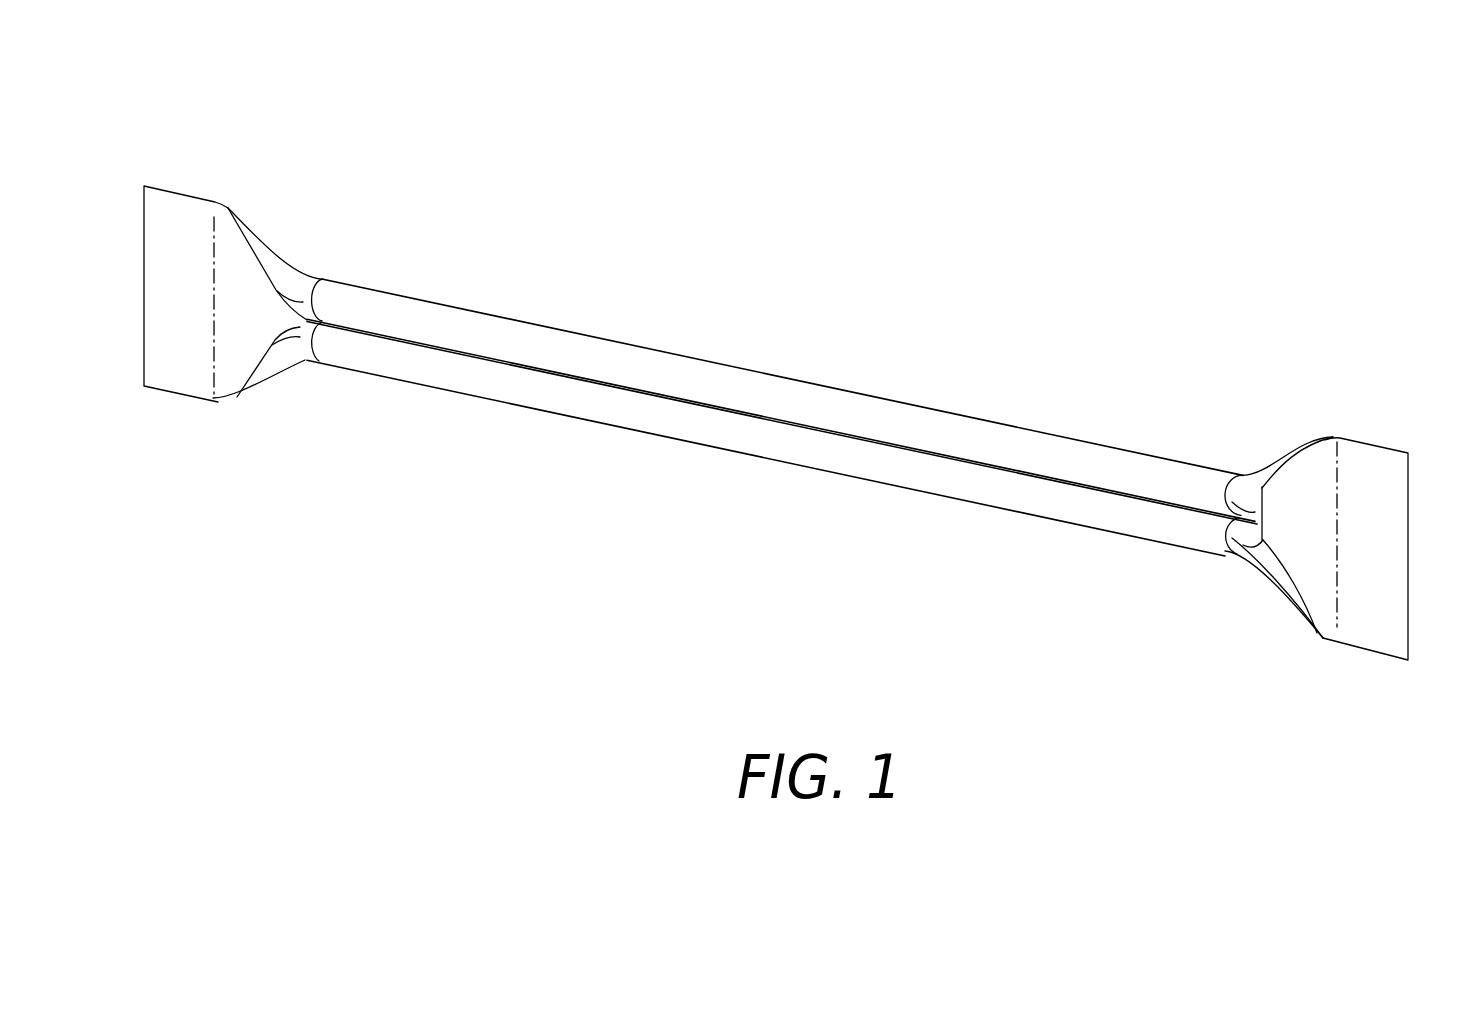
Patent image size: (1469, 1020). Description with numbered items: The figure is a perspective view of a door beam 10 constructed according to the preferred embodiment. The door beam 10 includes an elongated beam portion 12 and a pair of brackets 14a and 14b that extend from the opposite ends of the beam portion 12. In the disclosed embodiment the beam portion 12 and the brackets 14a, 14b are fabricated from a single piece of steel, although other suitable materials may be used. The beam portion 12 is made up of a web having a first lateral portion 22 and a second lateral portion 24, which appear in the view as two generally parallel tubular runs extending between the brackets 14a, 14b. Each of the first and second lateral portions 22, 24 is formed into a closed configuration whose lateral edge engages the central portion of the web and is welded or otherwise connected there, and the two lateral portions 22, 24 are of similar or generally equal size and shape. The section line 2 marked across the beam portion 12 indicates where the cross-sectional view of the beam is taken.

The door beam 10 is at (797, 376).
The beam portion 12 is at (767, 419).
The bracket 14a is at (186, 193).
The bracket 14b is at (1378, 443).
The first lateral portion 22 is at (932, 477).
The second lateral portion 24 is at (938, 428).
The section line 2- 2 is at (565, 290).